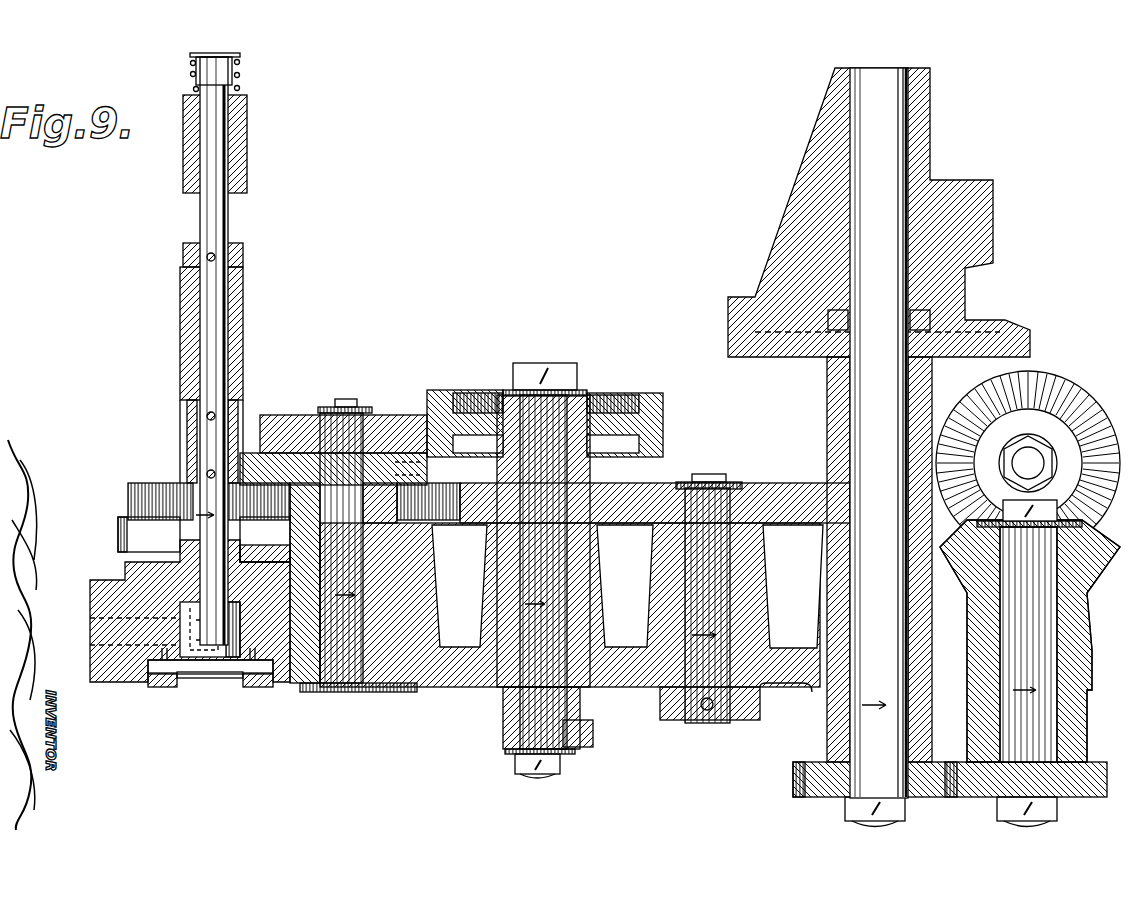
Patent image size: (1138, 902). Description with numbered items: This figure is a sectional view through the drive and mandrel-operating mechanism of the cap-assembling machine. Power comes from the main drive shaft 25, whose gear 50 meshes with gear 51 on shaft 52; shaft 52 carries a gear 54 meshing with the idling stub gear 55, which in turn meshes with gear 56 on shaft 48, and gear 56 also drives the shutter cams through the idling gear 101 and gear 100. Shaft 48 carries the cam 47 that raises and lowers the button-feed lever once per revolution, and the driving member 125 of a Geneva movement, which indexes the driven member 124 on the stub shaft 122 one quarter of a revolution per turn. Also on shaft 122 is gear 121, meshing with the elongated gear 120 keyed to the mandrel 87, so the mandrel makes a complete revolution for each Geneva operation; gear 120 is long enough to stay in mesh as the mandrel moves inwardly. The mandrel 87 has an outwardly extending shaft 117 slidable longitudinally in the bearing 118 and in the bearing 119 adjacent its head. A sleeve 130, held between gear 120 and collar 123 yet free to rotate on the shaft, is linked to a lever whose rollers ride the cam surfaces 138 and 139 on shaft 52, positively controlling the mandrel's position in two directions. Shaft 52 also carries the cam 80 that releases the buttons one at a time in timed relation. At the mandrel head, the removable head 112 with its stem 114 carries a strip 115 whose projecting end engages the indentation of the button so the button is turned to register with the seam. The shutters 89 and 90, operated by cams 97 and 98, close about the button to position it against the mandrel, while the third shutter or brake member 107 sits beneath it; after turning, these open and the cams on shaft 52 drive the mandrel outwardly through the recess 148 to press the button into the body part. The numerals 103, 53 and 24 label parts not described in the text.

The bearing 118 is at (247, 145).
The shaft 117 is at (222, 204).
The collar 123 is at (183, 262).
The sleeve 130 is at (180, 343).
The elongated gear 120 is at (187, 440).
The gear 100 is at (150, 483).
The bearing 119 is at (135, 540).
The cam 97 is at (110, 548).
The cam 98 is at (122, 578).
The stem 114 is at (175, 630).
The mandrel 87 is at (140, 672).
The shutter 90 is at (168, 665).
The recess 148 is at (187, 680).
The brake member or third shutter 107 is at (210, 668).
The strip 115 is at (220, 668).
The removable head 112 is at (226, 680).
The shutter 89 is at (252, 684).
The pedestal 103 is at (280, 583).
The gear 121 is at (268, 460).
The driven member of Geneva movement 124 is at (386, 420).
The driving member of Geneva movement 125 is at (440, 392).
The idling gear 101 is at (455, 528).
The stub shaft 122 is at (350, 692).
The shaft 48 is at (506, 690).
The cam 47 is at (595, 742).
The gear 56 is at (618, 526).
The idling stub gear 55 is at (765, 478).
The gear 54 is at (820, 490).
The shaft 52 is at (852, 584).
The shaft 53 is at (879, 433).
The cam surface 139 is at (730, 310).
The cam surface 138 is at (993, 250).
The cam 80 is at (934, 400).
The bearing body 24 is at (1030, 641).
The main drive shaft 25 is at (1022, 730).
The gear 51 is at (822, 798).
The gear 50 is at (982, 798).